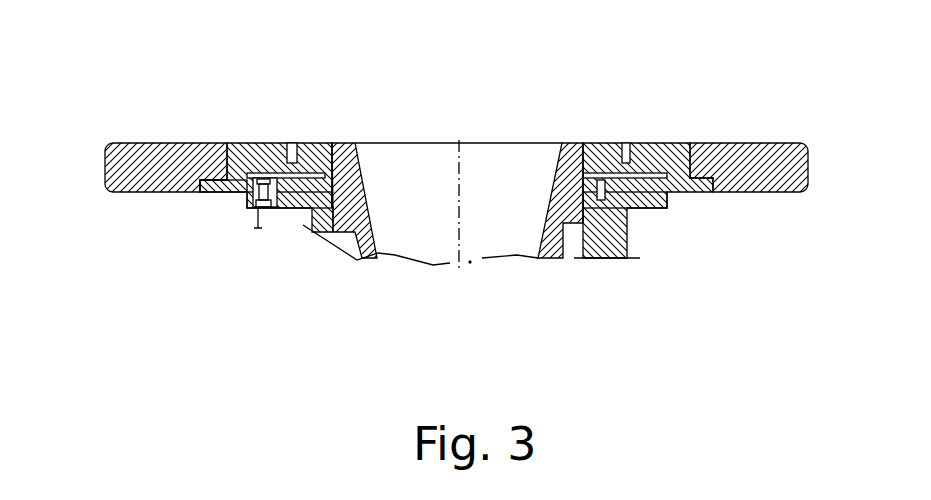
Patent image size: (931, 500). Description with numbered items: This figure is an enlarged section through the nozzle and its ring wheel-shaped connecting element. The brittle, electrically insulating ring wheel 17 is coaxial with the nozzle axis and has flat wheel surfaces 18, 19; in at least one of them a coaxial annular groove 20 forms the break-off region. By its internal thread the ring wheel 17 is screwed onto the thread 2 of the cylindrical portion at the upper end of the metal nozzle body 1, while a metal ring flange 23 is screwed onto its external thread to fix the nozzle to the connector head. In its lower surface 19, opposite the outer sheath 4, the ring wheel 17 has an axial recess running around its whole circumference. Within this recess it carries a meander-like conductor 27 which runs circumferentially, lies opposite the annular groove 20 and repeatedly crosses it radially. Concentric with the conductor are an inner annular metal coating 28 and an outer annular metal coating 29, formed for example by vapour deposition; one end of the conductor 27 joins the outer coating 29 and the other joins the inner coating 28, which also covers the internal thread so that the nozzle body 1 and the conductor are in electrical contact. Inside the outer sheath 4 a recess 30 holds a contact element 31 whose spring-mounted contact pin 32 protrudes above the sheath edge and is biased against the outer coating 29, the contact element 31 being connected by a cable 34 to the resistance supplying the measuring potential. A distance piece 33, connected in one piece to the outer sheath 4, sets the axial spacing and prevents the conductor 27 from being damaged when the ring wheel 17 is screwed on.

The nozzle body 1 is at (545, 268).
The thread 2 is at (399, 268).
The outer sheath 4 is at (512, 268).
The ring wheel 17 is at (156, 101).
The flat wheel surface 18 is at (780, 101).
The lower surface 19 is at (138, 221).
The annular groove 20 is at (456, 87).
The ring flange 23 is at (794, 138).
The meander-like conductor 27 is at (496, 293).
The inner annular metal coating 28 is at (456, 117).
The outer annular metal coating 29 is at (469, 94).
The recess 30 is at (163, 297).
The contact element 31 is at (151, 271).
The contact pin 32 is at (151, 242).
The distance piece 33 is at (623, 287).
The cable 34 is at (207, 301).